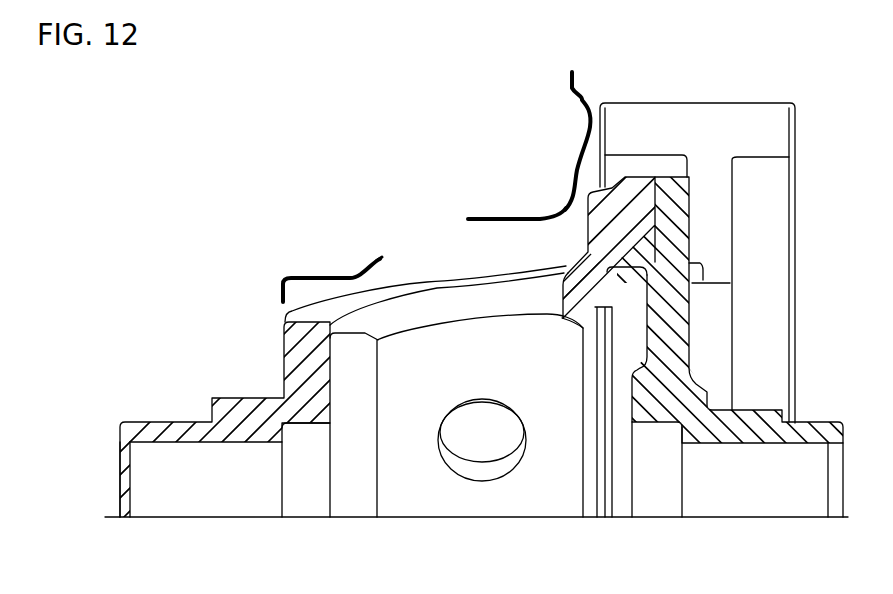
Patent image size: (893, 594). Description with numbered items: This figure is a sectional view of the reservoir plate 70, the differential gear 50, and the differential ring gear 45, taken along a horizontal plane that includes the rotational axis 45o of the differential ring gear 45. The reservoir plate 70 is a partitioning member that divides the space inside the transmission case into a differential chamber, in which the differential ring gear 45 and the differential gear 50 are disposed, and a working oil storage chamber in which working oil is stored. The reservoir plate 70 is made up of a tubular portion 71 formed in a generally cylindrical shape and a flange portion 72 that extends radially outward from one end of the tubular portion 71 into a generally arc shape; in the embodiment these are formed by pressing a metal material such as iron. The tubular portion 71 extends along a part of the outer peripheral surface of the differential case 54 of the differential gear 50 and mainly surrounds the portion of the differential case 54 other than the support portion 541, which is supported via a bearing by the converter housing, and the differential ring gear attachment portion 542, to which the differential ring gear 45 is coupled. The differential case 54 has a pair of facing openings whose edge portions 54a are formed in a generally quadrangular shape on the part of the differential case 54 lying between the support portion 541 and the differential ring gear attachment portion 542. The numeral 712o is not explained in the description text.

The differential ring gear 45 is at (718, 128).
The rotational axis 45o is at (247, 520).
The differential gear 50 is at (557, 293).
The differential case 54 is at (536, 487).
The edge portion 54a is at (468, 308).
The support portion 541 is at (257, 420).
The differential ring gear attachment portion 542 is at (618, 242).
The reservoir plate 70 is at (493, 193).
The tubular portion 71 is at (308, 277).
The gasket end 712o is at (385, 250).
The flange portion 72 is at (590, 121).